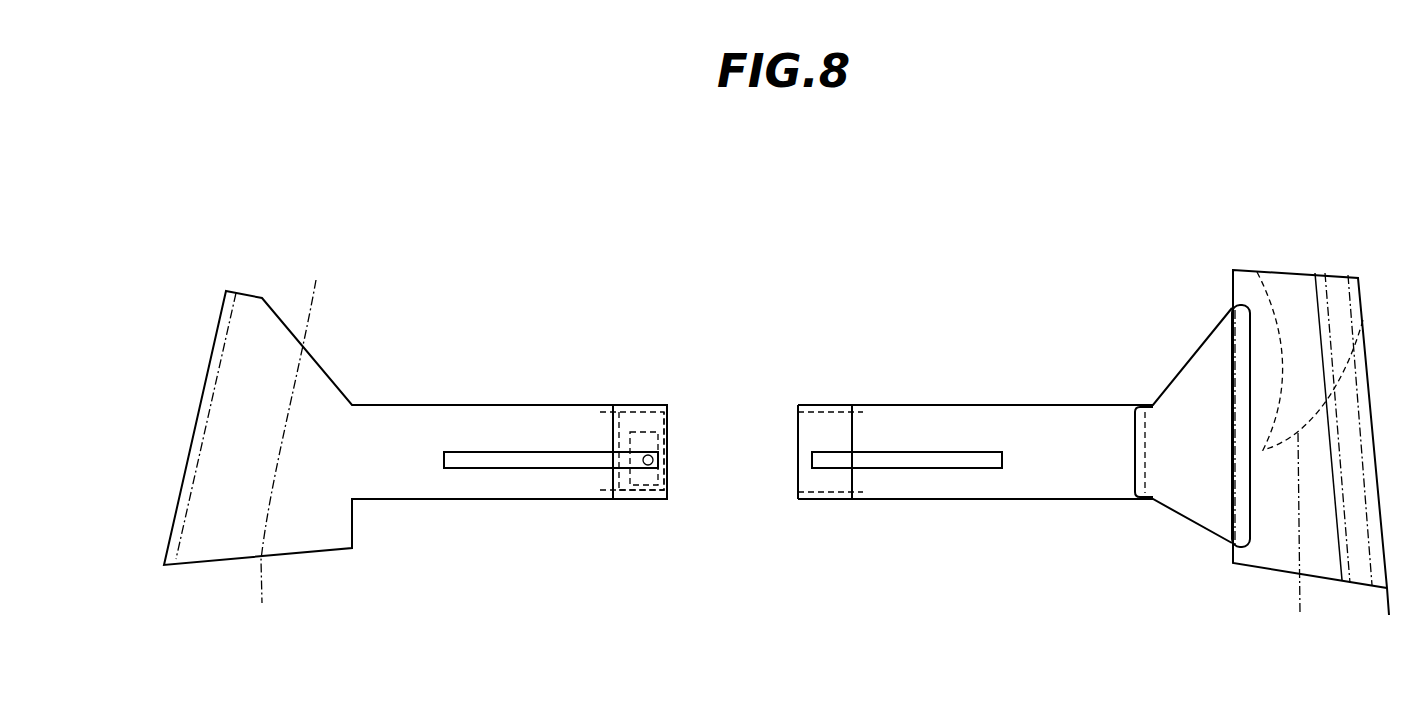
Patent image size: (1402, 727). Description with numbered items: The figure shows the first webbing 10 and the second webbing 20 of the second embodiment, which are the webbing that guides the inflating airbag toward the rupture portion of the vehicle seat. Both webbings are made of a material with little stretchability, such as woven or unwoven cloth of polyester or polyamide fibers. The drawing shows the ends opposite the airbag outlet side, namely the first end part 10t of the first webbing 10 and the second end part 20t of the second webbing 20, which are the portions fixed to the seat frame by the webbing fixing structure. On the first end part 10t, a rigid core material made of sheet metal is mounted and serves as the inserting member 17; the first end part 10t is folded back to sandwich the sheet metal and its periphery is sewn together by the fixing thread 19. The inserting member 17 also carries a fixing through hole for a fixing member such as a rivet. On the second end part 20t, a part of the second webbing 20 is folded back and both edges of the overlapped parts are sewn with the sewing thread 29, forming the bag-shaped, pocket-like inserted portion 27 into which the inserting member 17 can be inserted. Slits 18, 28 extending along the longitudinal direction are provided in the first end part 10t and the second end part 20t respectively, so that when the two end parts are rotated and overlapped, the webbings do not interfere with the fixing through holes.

The first webbing 10 is at (408, 405).
The first end part 10t is at (545, 377).
The inserting member 17 is at (645, 430).
The slit 18 is at (547, 462).
The fixing thread 19 is at (635, 500).
The second webbing 20 is at (1090, 405).
The second end part 20t is at (882, 345).
The inserted portion 27 is at (868, 432).
The slit 28 is at (907, 462).
The sewing thread 29 is at (825, 403).